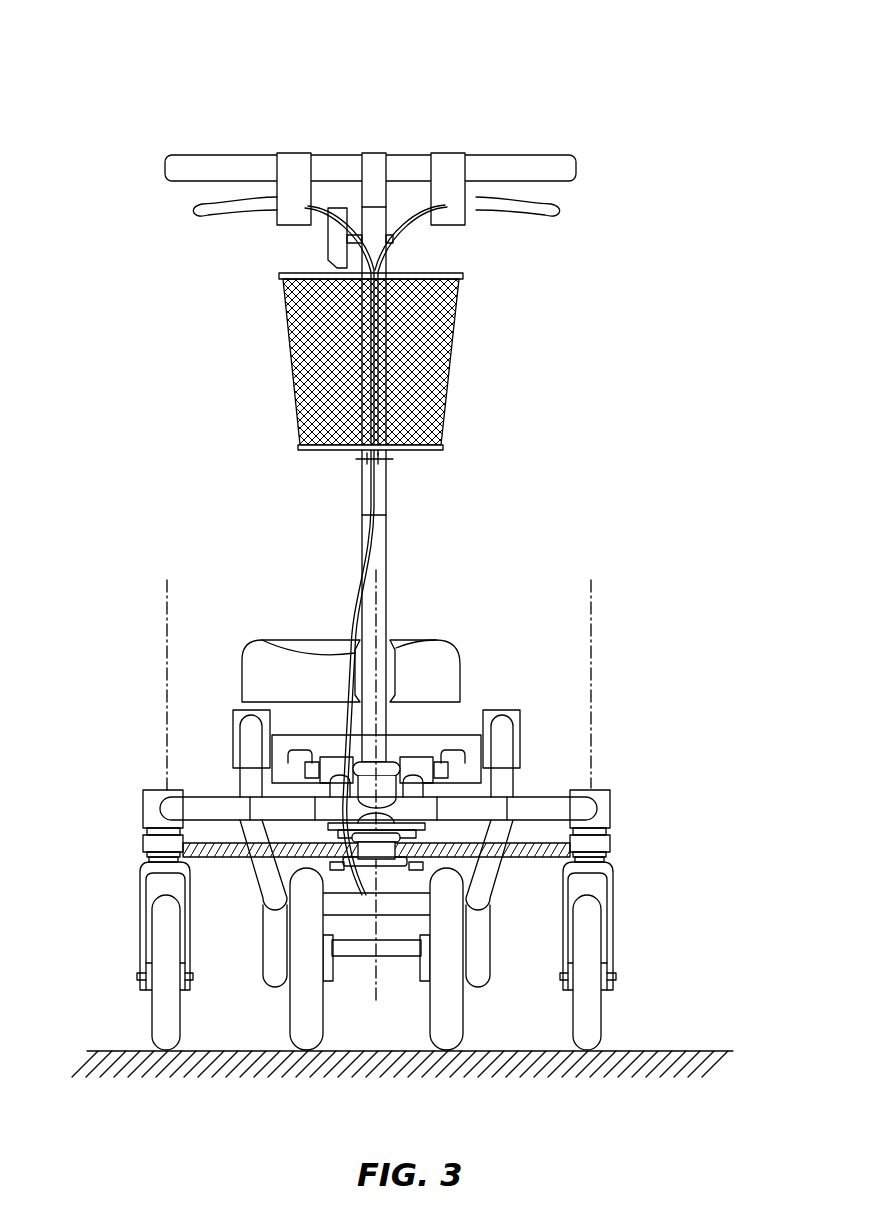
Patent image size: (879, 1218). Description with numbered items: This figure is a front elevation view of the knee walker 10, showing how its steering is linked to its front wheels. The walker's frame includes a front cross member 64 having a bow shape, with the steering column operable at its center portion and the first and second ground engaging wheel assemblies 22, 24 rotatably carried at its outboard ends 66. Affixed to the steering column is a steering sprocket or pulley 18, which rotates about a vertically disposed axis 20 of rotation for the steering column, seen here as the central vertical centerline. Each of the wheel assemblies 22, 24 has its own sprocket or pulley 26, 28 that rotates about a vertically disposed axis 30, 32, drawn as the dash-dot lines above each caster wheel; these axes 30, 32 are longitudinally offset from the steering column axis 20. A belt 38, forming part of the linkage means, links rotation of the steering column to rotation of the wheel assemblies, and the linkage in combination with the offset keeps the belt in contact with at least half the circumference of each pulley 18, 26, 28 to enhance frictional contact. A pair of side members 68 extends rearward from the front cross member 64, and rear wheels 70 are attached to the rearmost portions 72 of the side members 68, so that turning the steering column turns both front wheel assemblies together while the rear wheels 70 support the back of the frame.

The knee walker 10 is at (140, 76).
The steering sprocket or pulley 18 is at (394, 870).
The axis of rotation for the steering column 20 is at (376, 975).
The first ground engaging wheel assembly 22 is at (115, 877).
The second ground engaging wheel assembly 24 is at (654, 842).
The sprocket or pulley 26 is at (146, 847).
The sprocket or pulley 28 is at (600, 843).
The axis of rotation 30 is at (165, 658).
The axis of rotation 32 is at (593, 647).
The belt 38 is at (217, 856).
The front cross member 64 is at (528, 806).
The outboard ends 66 is at (200, 812).
The side members 68 is at (267, 877).
The rear wheels 70 is at (472, 1002).
The rearmost portions 72 is at (273, 957).